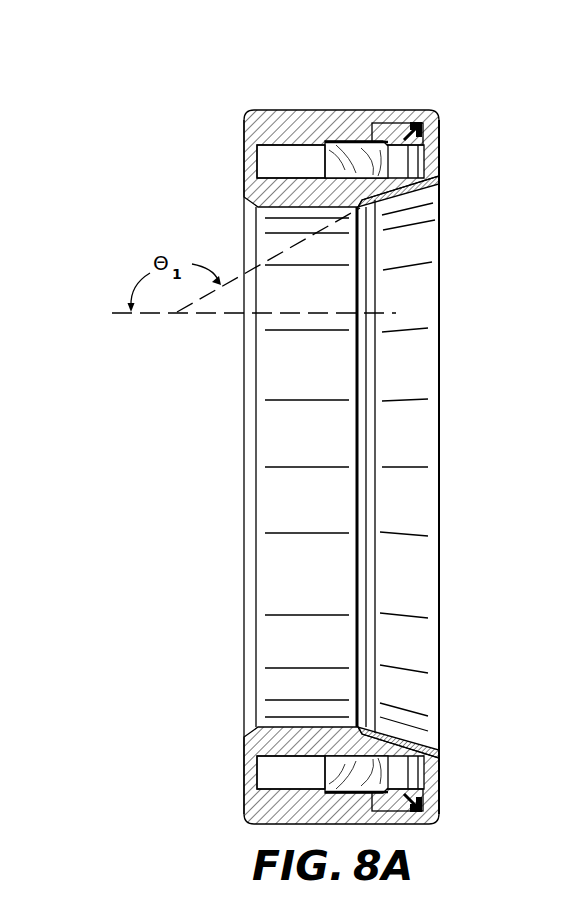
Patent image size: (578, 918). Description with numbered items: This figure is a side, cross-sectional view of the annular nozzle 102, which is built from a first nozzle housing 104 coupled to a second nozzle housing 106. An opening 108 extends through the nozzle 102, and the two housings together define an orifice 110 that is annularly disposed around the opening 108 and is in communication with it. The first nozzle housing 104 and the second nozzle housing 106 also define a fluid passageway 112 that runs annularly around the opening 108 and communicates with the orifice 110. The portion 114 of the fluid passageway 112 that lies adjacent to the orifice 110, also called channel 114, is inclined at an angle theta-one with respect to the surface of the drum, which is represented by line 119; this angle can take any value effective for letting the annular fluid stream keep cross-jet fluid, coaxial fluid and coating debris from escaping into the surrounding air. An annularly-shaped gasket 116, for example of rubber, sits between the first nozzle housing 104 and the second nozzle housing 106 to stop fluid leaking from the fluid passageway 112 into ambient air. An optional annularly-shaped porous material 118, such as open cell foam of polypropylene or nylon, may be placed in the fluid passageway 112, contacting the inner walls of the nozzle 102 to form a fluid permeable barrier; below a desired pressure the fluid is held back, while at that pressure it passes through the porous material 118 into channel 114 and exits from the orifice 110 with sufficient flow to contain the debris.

The annular nozzle 102 is at (368, 60).
The first nozzle housing 104 is at (247, 118).
The second nozzle housing 106 is at (440, 128).
The opening 108 is at (427, 375).
The orifice 110 is at (364, 212).
The fluid passageway 112 is at (278, 165).
The portion of the fluid passageway (channel) 114 is at (390, 207).
The annularly-shaped gasket 116 is at (442, 137).
The annularly-shaped porous material 118 is at (358, 141).
The line representing the drum surface 119 is at (153, 316).